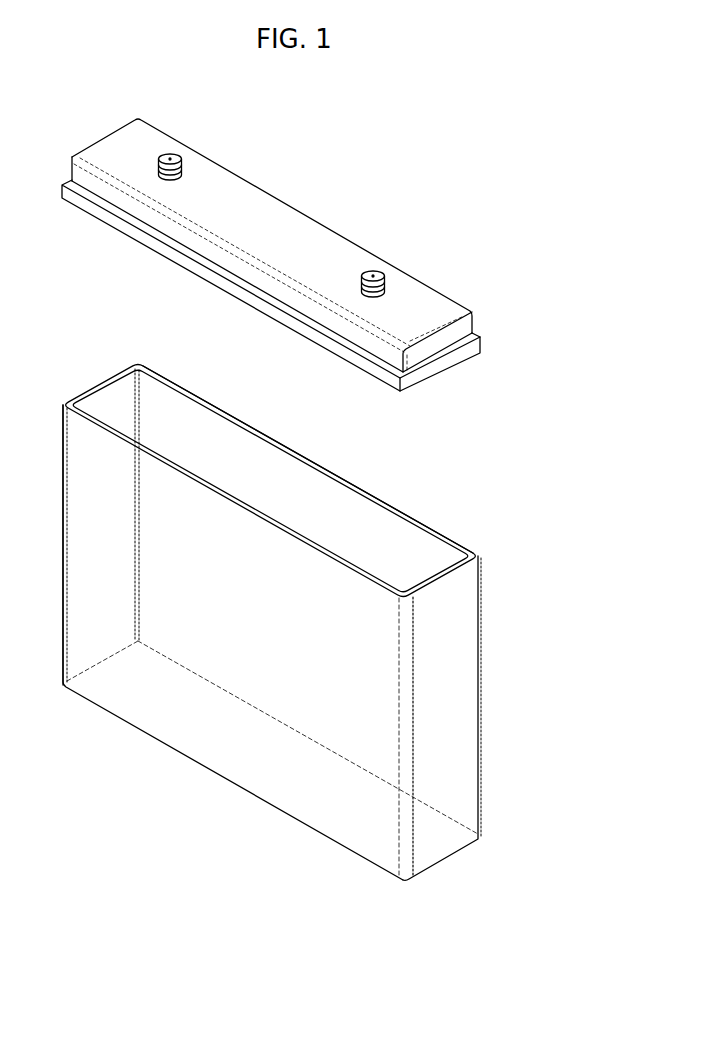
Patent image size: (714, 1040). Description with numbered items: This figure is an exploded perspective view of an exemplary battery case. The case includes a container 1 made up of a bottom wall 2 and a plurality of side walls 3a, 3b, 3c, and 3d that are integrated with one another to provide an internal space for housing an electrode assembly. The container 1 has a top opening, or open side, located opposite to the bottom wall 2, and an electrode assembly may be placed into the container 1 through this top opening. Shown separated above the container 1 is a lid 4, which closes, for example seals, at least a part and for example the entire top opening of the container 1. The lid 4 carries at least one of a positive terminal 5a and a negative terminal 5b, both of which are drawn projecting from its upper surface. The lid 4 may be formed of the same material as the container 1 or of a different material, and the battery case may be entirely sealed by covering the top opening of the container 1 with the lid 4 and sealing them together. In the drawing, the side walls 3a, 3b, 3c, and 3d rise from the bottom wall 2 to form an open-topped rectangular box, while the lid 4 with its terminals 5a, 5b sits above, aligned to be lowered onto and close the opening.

The container 1 is at (478, 535).
The bottom wall 2 is at (197, 763).
The side wall 3a is at (466, 664).
The side wall 3b is at (193, 477).
The side wall 3c is at (97, 384).
The side wall 3d is at (328, 468).
The lid 4 is at (276, 214).
The positive terminal 5a is at (171, 155).
The negative terminal 5b is at (377, 270).